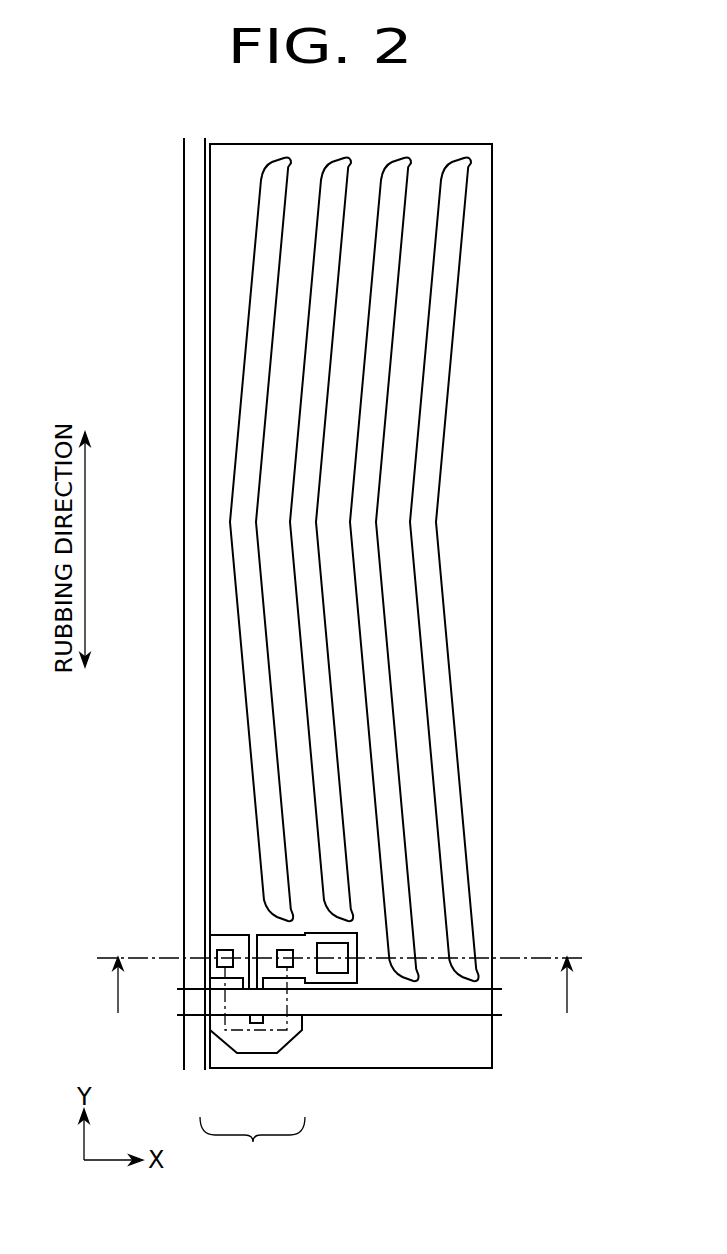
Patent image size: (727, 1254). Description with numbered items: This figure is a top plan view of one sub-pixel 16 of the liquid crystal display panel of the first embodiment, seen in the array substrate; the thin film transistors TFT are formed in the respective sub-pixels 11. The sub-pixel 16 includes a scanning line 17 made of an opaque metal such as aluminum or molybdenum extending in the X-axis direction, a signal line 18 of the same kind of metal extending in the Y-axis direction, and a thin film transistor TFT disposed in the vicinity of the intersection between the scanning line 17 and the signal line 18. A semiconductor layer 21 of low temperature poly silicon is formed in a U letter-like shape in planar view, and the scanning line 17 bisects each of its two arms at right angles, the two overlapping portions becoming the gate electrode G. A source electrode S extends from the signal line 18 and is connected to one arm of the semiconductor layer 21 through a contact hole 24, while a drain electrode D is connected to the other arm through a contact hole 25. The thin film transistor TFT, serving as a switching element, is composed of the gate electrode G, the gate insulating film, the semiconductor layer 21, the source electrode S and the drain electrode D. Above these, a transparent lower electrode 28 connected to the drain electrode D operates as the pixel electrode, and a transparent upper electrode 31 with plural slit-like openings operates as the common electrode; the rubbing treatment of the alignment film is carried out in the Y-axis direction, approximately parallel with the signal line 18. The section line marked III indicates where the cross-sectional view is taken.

The sub-pixel 11 is at (47, 176).
The sub-pixel 16 is at (468, 342).
The scanning line 17 is at (352, 1000).
The signal line 18 is at (203, 724).
The semiconductor layer 21 is at (262, 1045).
The contact hole for the source electrode 24 is at (226, 950).
The contact hole for the drain electrode 25 is at (283, 952).
The lower electrode 28 is at (248, 553).
The upper electrode 31 is at (223, 628).
The source electrode S is at (225, 975).
The gate electrode G is at (238, 1040).
The drain electrode D is at (287, 975).
The section line III- III is at (340, 1001).
The thin film transistor TFT is at (252, 1145).